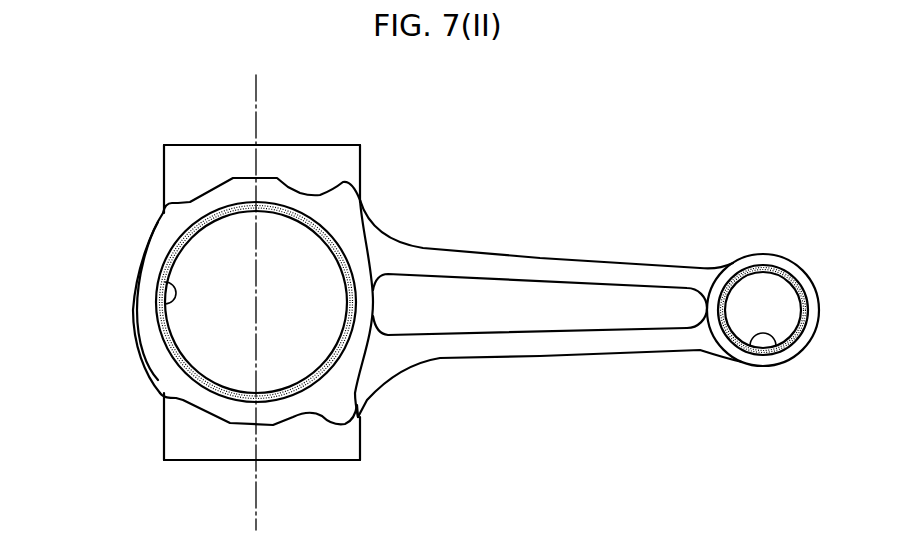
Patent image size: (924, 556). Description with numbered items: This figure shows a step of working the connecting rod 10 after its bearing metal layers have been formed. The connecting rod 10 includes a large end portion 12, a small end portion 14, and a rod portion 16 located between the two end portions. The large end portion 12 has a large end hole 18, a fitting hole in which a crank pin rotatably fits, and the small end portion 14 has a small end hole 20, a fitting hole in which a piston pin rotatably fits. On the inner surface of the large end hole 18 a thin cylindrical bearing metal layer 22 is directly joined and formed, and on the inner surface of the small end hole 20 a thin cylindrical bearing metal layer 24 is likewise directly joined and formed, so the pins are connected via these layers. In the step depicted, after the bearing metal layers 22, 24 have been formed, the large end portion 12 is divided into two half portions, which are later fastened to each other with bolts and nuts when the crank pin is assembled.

The connecting rod 10 is at (537, 180).
The large end portion 12 is at (138, 342).
The small end portion 14 is at (764, 253).
The rod portion 16 is at (562, 357).
The large end hole 18 is at (178, 286).
The small end hole 20 is at (772, 335).
The bearing metal layer 22 is at (288, 210).
The bearing metal layer 24 is at (790, 273).